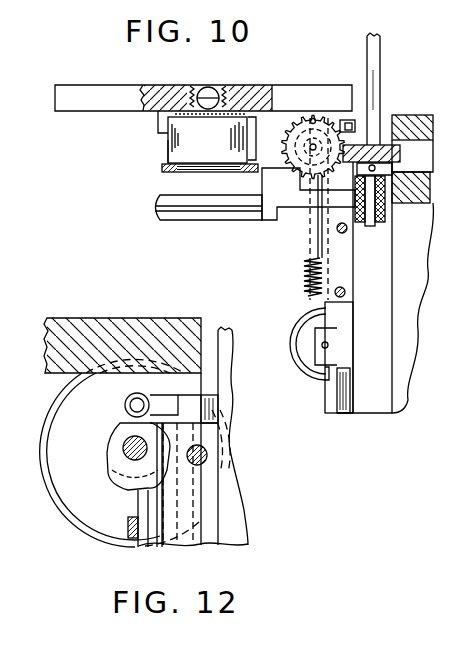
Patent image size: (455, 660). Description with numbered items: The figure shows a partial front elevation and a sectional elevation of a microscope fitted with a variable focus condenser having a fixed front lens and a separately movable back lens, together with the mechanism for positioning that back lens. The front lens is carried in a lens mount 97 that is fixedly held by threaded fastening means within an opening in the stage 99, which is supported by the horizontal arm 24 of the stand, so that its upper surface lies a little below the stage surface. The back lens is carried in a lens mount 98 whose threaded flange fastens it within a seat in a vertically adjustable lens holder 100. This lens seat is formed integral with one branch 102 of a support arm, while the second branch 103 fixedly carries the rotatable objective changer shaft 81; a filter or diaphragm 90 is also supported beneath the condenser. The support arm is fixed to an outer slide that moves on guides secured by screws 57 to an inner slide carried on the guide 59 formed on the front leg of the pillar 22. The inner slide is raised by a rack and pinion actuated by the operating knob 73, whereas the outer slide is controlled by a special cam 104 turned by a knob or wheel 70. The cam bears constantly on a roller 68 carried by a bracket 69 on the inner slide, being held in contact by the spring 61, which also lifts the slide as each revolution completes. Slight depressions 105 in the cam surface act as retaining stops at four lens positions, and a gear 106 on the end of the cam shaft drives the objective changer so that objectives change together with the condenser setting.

In FIG. 10, the pillar 22 is at (377, 397).
In FIG. 12, the pillar 22 is at (228, 527).
In FIG. 10, the horizontal arm 24 is at (156, 128).
In FIG. 10, the screw 57 is at (347, 292).
In FIG. 10, the guide 59 is at (334, 390).
In FIG. 10, the spring 61 is at (300, 288).
In FIG. 10, the roller 68 is at (313, 120).
In FIG. 12, the roller 68 is at (125, 405).
In FIG. 10, the bracket 69 is at (335, 124).
In FIG. 12, the bracket 69 is at (180, 407).
In FIG. 12, the knob or wheel 70 is at (77, 491).
In FIG. 10, the operating knob 73 is at (296, 366).
In FIG. 10, the objective changer shaft 81 is at (374, 83).
In FIG. 10, the filter or diaphragm 90 is at (200, 208).
In FIG. 10, the front lens mount 97 is at (184, 88).
In FIG. 10, the back lens mount 98 is at (172, 143).
In FIG. 10, the stage 99 is at (73, 95).
In FIG. 10, the lens holder 100 is at (168, 165).
In FIG. 10, the branch of arm 102 is at (258, 175).
In FIG. 10, the branch of arm 103 is at (300, 204).
In FIG. 10, the cam 104 is at (294, 117).
In FIG. 12, the cam 104 is at (122, 482).
In FIG. 12, the depression 105 is at (127, 503).
In FIG. 10, the gear 106 is at (288, 154).